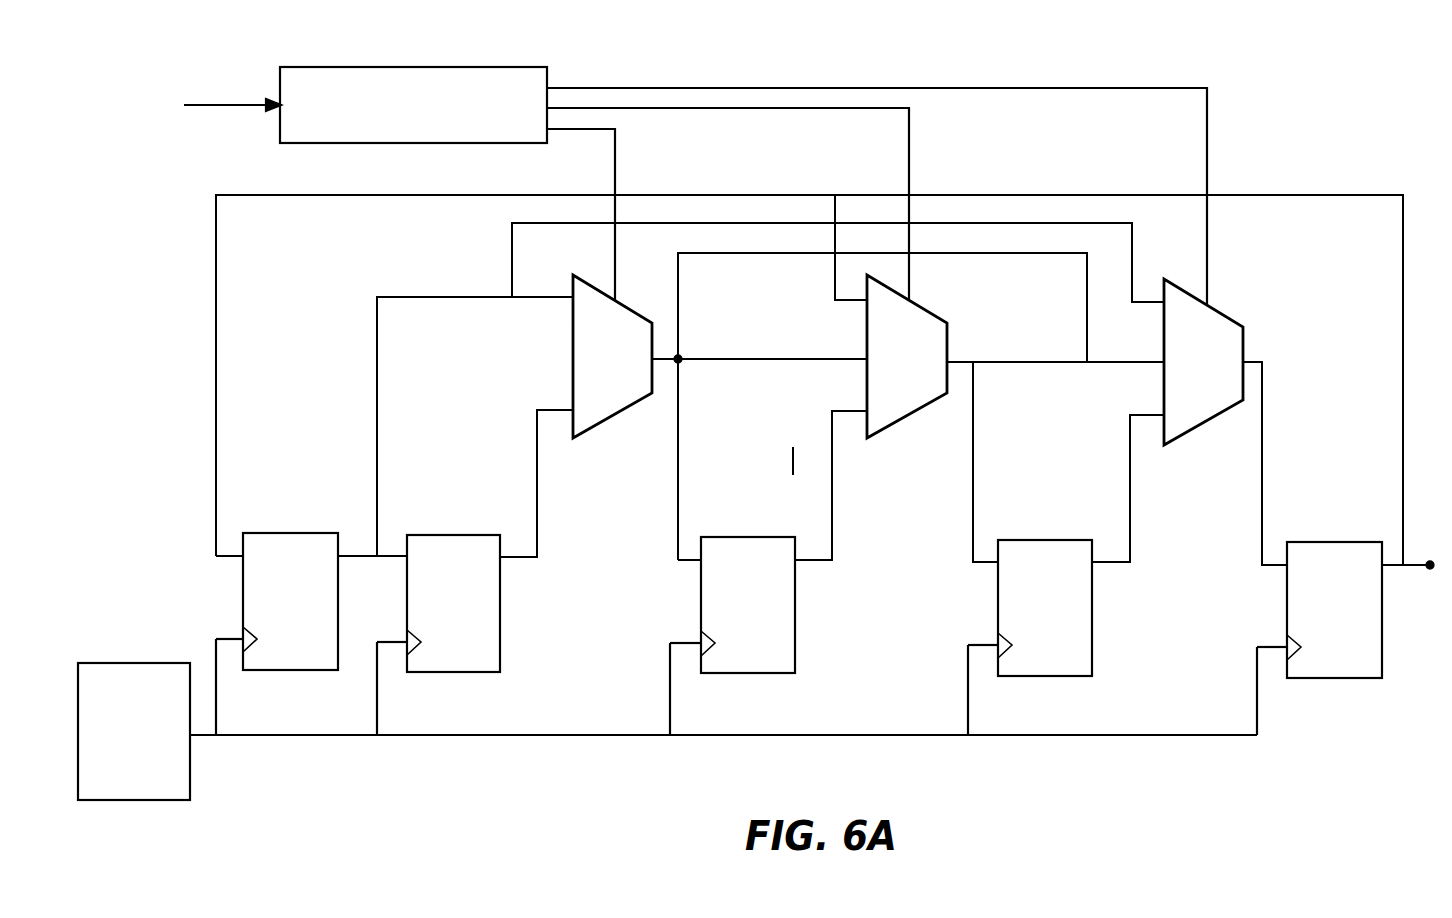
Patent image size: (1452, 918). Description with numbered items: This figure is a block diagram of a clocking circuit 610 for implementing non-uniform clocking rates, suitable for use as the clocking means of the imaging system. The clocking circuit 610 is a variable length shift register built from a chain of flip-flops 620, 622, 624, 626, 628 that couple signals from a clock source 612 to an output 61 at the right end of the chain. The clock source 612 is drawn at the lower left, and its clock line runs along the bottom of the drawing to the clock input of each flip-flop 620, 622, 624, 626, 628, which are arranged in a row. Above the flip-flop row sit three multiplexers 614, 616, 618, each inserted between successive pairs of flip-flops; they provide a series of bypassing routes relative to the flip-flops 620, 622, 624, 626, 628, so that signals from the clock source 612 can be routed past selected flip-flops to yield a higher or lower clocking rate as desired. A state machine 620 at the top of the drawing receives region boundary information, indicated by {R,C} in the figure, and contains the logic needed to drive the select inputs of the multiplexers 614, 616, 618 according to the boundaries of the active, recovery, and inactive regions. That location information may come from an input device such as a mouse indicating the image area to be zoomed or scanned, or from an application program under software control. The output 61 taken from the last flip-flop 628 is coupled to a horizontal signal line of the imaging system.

The clocking circuit 610 is at (1313, 119).
The clock source 612 is at (130, 663).
The multiplexer 614 is at (597, 426).
The multiplexer 616 is at (893, 427).
The multiplexer 618 is at (1232, 319).
The state machine 620 is at (487, 68).
The flip-flop 622 is at (445, 535).
The flip-flop 624 is at (748, 537).
The flip-flop 626 is at (1045, 540).
The flip-flop 628 is at (1352, 542).
The output node 61 is at (1430, 572).